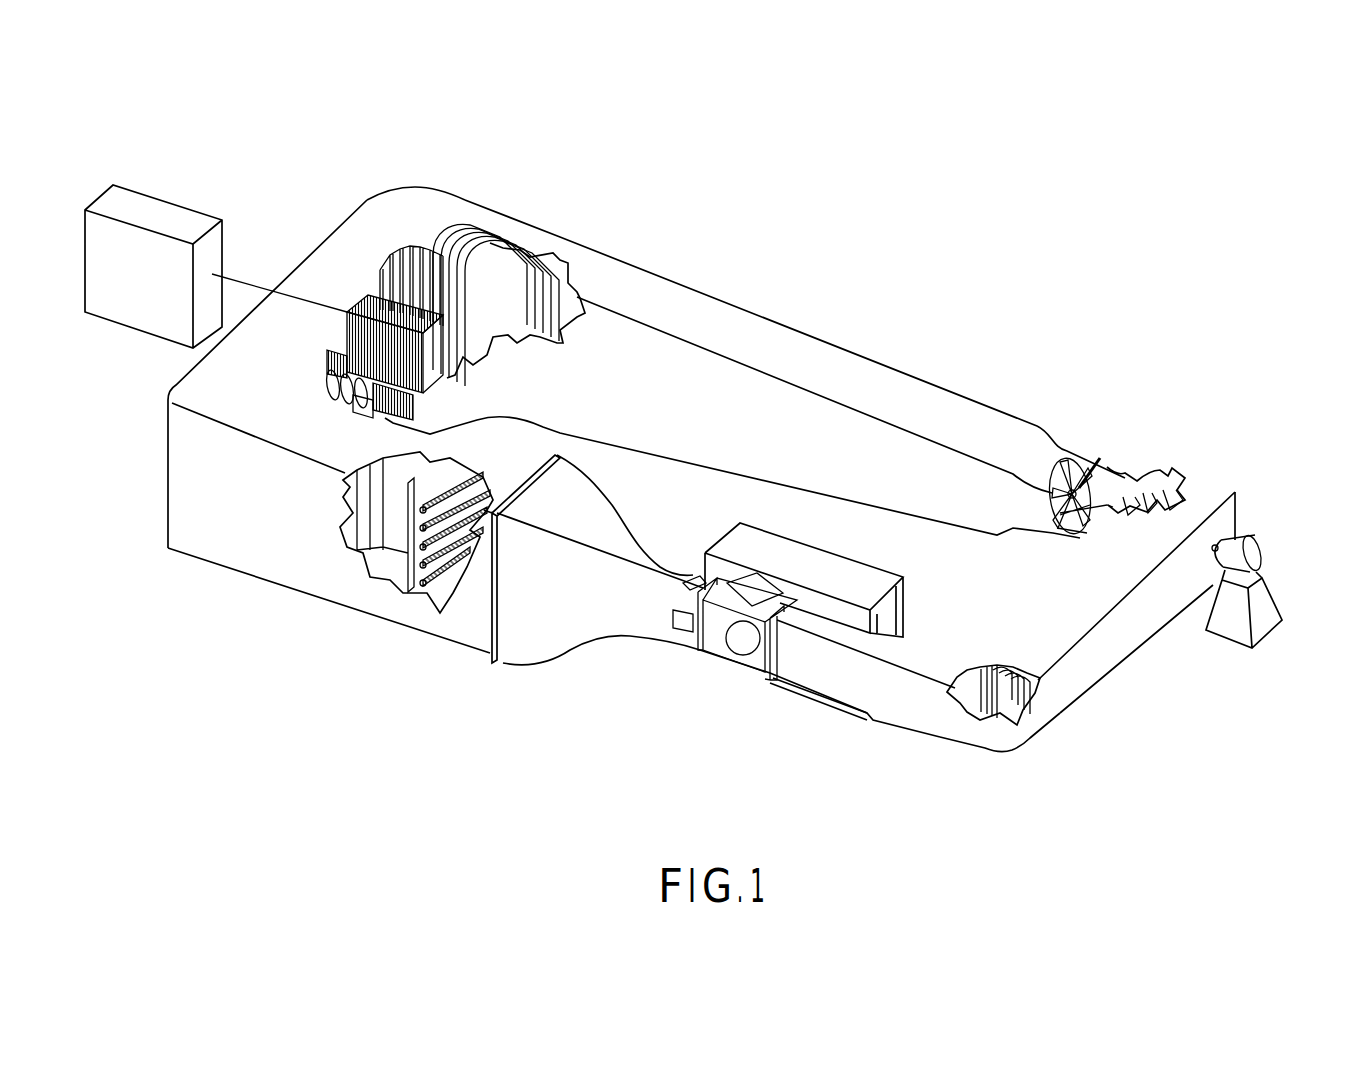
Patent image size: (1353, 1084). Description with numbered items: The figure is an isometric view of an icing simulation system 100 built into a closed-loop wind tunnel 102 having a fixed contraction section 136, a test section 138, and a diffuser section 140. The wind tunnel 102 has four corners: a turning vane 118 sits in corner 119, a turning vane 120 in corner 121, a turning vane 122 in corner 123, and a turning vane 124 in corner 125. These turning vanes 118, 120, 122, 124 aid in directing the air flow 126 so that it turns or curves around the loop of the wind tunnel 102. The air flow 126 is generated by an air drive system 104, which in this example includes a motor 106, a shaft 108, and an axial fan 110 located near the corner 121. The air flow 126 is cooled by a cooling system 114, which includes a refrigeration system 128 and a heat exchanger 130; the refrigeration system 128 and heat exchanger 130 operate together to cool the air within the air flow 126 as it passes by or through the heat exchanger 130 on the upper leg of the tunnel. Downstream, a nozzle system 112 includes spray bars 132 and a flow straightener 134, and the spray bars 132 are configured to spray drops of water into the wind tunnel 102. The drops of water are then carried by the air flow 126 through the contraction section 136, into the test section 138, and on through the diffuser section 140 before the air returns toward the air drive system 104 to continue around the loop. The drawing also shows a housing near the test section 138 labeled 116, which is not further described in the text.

The icing simulation system 100 is at (1196, 170).
The wind tunnel 102 is at (843, 243).
The air drive system 104 is at (1236, 416).
The motor 106 is at (1244, 537).
The shaft 108 is at (1137, 480).
The axial fan 110 is at (1100, 458).
The nozzle system 112 is at (338, 650).
The cooling system 114 is at (260, 173).
The sensor housing 116 is at (830, 552).
The turning vane 118 is at (995, 713).
The corner 119 is at (1003, 752).
The turning vane 120 is at (1177, 488).
The corner 121 is at (1237, 491).
The turning vane 122 is at (500, 255).
The corner 123 is at (428, 190).
The turning vane 124 is at (337, 408).
The corner 125 is at (170, 388).
The air flow 126 is at (843, 377).
The refrigeration system 128 is at (126, 283).
The heat exchanger 130 is at (368, 297).
The spray bars 132 is at (423, 586).
The flow straightener 134 is at (403, 568).
The contraction section 136 is at (545, 603).
The test section 138 is at (738, 638).
The diffuser section 140 is at (821, 684).